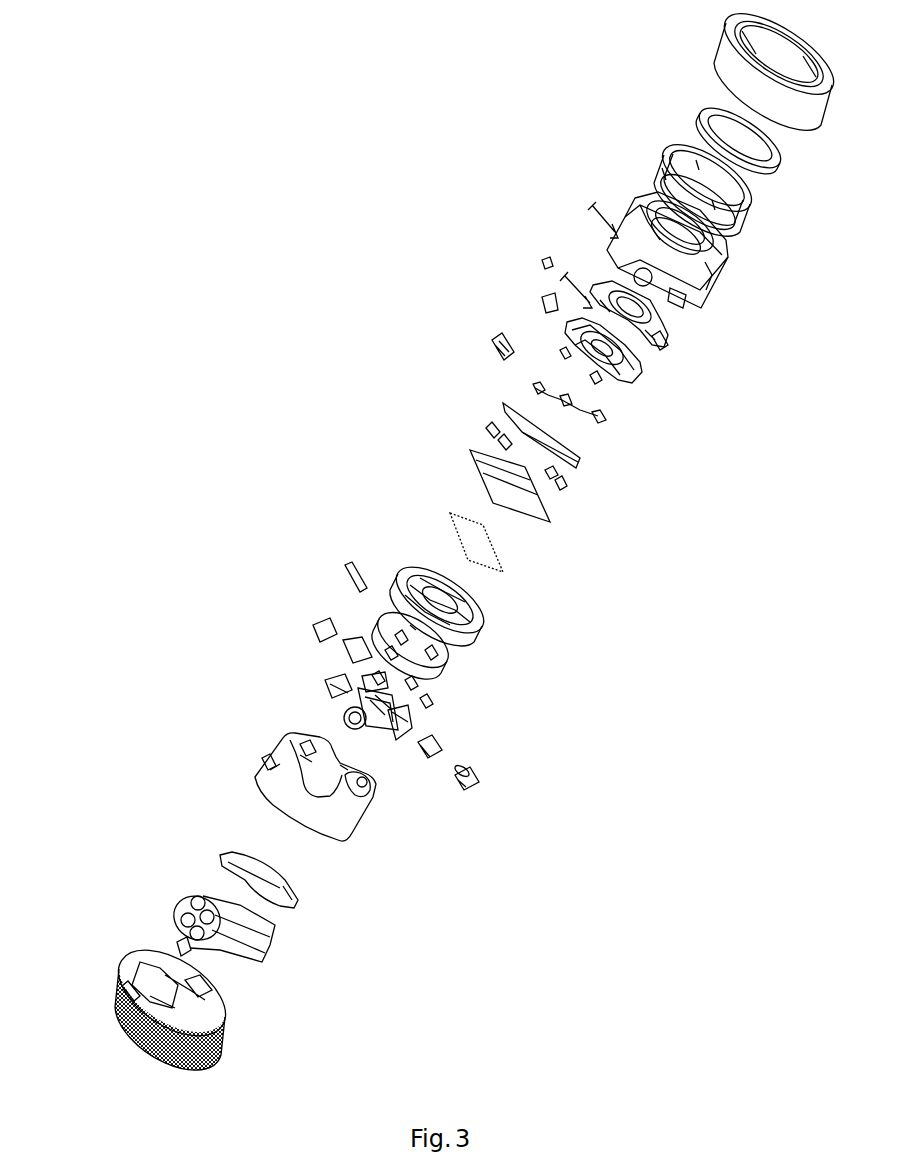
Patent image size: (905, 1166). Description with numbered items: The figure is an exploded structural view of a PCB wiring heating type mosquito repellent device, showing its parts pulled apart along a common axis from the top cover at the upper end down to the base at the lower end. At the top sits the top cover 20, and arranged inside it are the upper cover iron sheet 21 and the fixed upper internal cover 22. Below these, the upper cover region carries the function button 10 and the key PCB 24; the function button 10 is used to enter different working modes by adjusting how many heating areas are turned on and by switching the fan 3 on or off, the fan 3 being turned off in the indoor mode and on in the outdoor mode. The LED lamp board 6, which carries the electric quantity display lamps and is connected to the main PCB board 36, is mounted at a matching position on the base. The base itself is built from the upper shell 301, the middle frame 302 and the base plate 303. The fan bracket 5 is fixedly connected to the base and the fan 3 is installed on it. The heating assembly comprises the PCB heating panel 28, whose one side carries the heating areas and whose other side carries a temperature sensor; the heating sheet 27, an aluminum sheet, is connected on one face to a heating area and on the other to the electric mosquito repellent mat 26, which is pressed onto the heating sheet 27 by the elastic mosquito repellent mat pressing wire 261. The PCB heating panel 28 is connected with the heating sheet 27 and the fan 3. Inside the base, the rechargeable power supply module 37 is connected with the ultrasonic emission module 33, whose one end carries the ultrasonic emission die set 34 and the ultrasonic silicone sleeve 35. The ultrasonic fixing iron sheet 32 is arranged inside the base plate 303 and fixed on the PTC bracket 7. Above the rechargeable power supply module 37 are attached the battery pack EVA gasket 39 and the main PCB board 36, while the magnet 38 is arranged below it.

The top cover 20 is at (722, 55).
The upper cover iron sheet 21 is at (697, 119).
The fixed upper internal cover 22 is at (656, 168).
The function button 10 is at (590, 212).
The key PCB 24 is at (562, 277).
The LED lamp board 6 is at (490, 333).
The upper shell 301 is at (697, 290).
The fan 3 is at (663, 330).
The fan bracket 5 is at (640, 373).
The elastic mosquito repellent mat pressing wire 261 is at (600, 417).
The electric mosquito repellent mat 26 is at (502, 410).
The heating sheet 27 is at (465, 487).
The PCB heating panel 28 is at (482, 550).
The PTC bracket 7 is at (478, 630).
The ultrasonic fixing iron sheet 32 is at (380, 617).
The ultrasonic emission module 33 is at (327, 693).
The ultrasonic emission die set 34 is at (443, 747).
The ultrasonic silicone sleeve 35 is at (480, 775).
The middle frame 302 is at (345, 838).
The main PCB board 36 is at (218, 860).
The rechargeable power supply module 37 is at (192, 903).
The battery pack EVA gasket 39 is at (252, 925).
The magnet 38 is at (175, 948).
The base plate 303 is at (115, 1002).